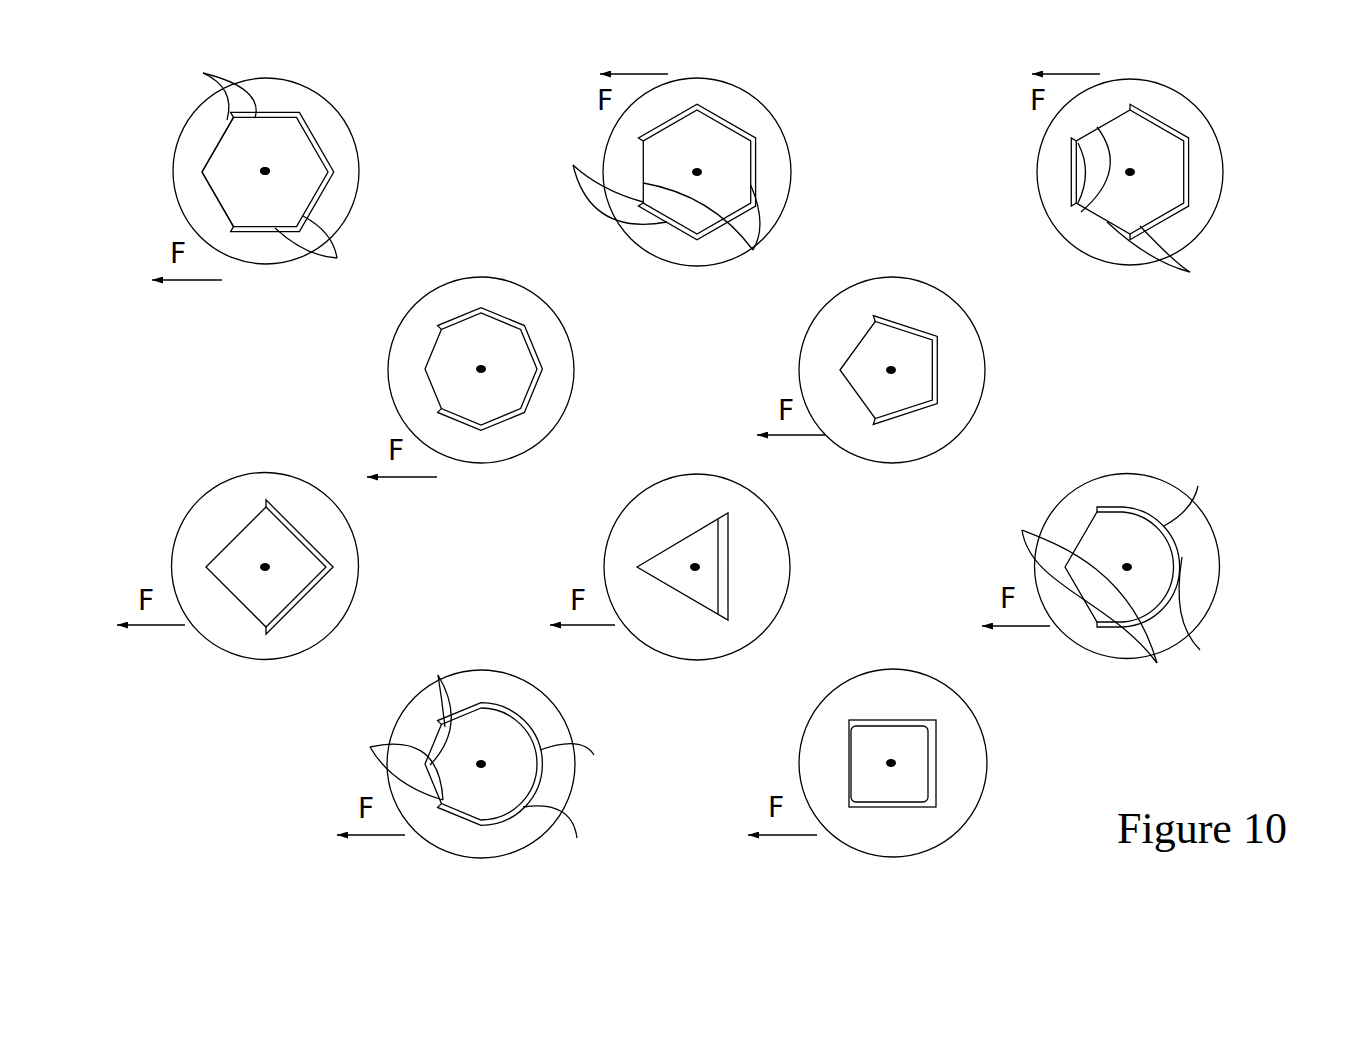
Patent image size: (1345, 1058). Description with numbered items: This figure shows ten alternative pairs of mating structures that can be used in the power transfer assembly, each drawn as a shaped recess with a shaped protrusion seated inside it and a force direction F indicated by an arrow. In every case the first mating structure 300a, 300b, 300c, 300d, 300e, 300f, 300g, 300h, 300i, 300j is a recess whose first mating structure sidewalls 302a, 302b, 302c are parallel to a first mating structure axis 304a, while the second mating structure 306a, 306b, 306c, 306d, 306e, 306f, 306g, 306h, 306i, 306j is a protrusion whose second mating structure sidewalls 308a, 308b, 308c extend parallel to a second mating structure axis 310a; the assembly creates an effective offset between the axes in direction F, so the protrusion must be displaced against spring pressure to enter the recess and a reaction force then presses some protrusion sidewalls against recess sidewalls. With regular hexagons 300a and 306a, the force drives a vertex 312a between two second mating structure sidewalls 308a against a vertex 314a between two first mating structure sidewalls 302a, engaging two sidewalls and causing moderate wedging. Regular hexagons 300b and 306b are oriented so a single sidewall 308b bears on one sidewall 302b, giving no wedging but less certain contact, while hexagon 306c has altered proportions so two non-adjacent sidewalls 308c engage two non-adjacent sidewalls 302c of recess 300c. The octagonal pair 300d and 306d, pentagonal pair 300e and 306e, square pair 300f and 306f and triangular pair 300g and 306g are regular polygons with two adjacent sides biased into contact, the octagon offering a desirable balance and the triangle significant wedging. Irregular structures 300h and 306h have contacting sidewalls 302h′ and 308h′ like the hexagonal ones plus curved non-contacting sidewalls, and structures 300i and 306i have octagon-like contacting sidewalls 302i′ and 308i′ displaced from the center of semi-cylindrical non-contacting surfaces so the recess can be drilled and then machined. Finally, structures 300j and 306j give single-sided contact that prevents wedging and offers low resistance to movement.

The first mating structure 300a is at (318, 185).
The first mating structure sidewalls 302a is at (345, 246).
The first mating structure axis 304a is at (271, 170).
The second mating structure 306a is at (309, 138).
The second mating structure sidewalls 308a is at (193, 88).
The second mating structure axis 310a is at (259, 169).
The vertex 312a is at (203, 173).
The vertex 314a is at (204, 172).
The first mating structure 300b is at (750, 185).
The first mating structure sidewalls 302b is at (598, 178).
The second mating structure 306b is at (752, 135).
The second mating structure sidewall 308b is at (733, 232).
The first mating structure 300c is at (1180, 185).
The first mating structure sidewalls 302c is at (1186, 255).
The second mating structure 306c is at (1180, 135).
The second mating structure sidewalls 308c is at (1081, 212).
The first mating structure 300d is at (530, 378).
The second mating structure 306d is at (525, 338).
The first mating structure 300e is at (932, 382).
The second mating structure 306e is at (939, 347).
The first mating structure 300f is at (317, 570).
The second mating structure 306f is at (309, 542).
The first mating structure 300g is at (723, 587).
The second mating structure 306g is at (727, 541).
The first mating structure 300h is at (1182, 555).
The contacting sidewalls 302h′ is at (1063, 577).
The second mating structure 306h is at (1182, 533).
The contacting sidewalls 308h′ is at (1112, 616).
The first mating structure 300i is at (540, 778).
The contacting sidewalls 302i′ is at (371, 766).
The second mating structure 306i is at (543, 733).
The contacting sidewalls 308i′ is at (426, 702).
The first mating structure 300j is at (932, 775).
The second mating structure 306j is at (939, 733).